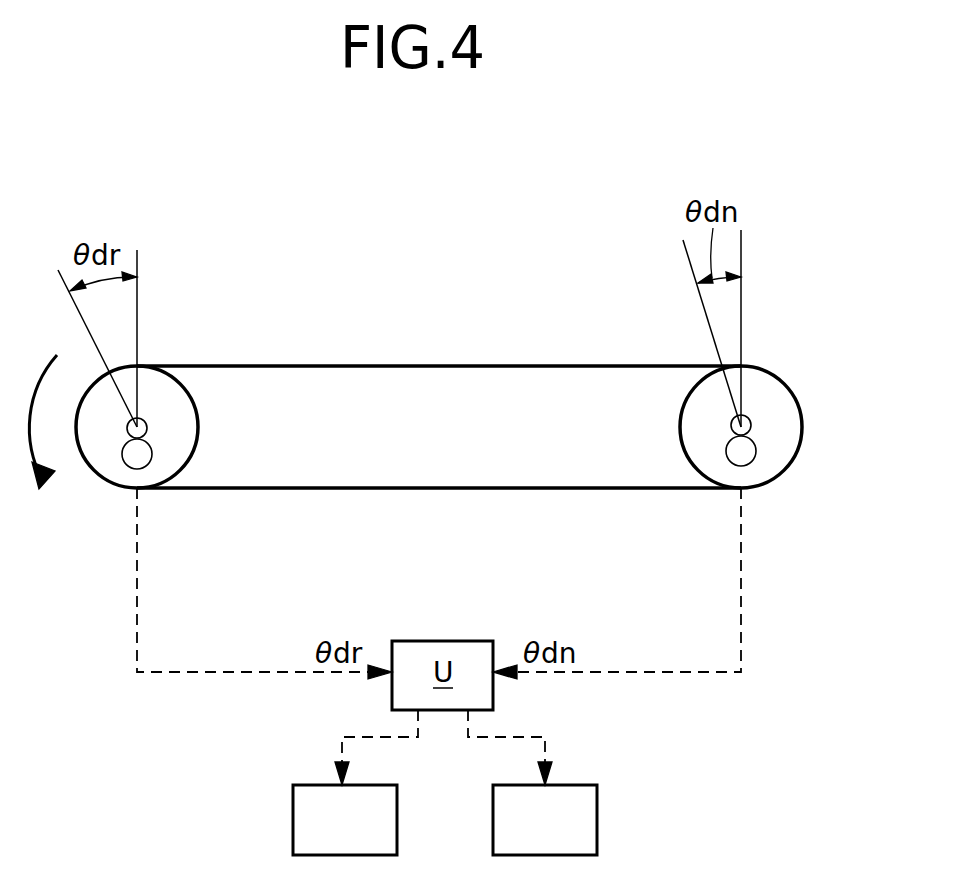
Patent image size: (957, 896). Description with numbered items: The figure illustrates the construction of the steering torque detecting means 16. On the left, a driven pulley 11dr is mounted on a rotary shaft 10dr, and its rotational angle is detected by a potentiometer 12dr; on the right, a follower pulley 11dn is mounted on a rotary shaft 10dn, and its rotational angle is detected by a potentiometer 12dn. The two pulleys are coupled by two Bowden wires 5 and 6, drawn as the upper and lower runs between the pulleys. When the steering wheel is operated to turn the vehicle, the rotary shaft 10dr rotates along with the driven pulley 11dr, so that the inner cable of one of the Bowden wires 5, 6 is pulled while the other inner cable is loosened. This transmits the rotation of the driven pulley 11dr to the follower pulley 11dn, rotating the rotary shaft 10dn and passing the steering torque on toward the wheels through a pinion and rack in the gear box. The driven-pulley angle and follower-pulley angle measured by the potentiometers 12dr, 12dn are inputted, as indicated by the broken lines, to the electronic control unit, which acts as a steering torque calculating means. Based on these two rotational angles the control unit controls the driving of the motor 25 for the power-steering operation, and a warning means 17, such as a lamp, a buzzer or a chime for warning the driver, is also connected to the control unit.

The steering torque detecting means 16 is at (439, 343).
The Bowden wire 5 is at (392, 367).
The Bowden wire 6 is at (390, 484).
The rotary shaft 10dr is at (147, 422).
The driven pulley 11dr is at (197, 447).
The potentiometer 12dr is at (125, 464).
The rotary shaft 10dn is at (730, 422).
The follower pulley 11dn is at (685, 450).
The potentiometer 12dn is at (756, 447).
The warning means 17 is at (362, 833).
The motor 25 is at (562, 833).